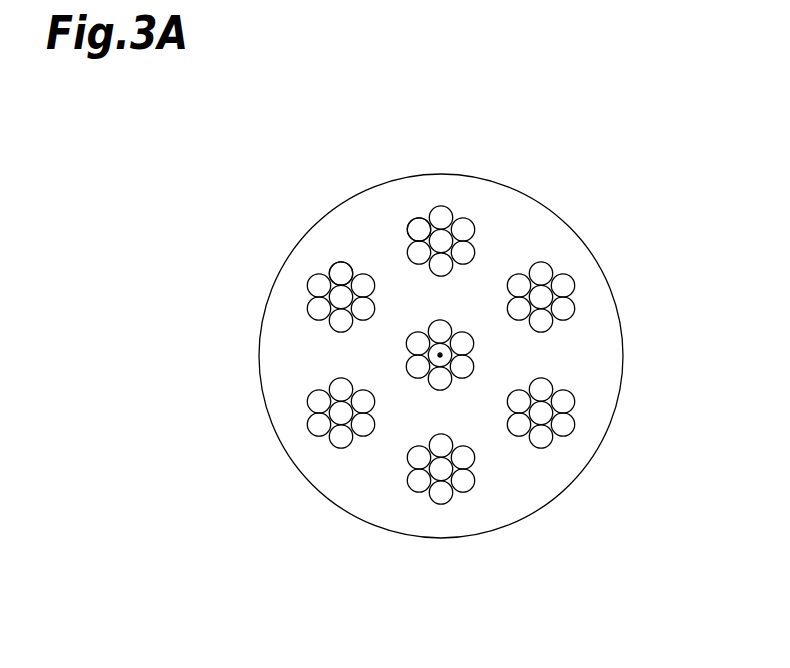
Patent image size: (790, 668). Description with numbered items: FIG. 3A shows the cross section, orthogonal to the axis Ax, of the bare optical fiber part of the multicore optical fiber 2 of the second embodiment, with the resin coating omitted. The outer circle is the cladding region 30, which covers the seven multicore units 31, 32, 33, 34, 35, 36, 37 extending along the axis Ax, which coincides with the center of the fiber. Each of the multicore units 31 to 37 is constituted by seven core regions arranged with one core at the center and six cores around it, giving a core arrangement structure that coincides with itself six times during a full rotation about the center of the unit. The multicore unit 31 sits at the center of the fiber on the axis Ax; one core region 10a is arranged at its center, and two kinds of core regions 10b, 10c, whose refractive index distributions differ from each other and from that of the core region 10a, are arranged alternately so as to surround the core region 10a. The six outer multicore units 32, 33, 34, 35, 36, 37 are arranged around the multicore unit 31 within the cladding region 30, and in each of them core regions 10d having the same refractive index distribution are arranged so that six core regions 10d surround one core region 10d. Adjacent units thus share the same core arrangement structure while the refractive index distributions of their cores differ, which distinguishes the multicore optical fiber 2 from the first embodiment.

The multicore optical fiber 2 is at (589, 147).
The cladding region 30 is at (607, 352).
The multicore unit 31 is at (366, 355).
The multicore unit 32 is at (314, 271).
The multicore unit 33 is at (443, 205).
The multicore unit 34 is at (569, 269).
The multicore unit 35 is at (569, 440).
The multicore unit 36 is at (424, 501).
The multicore unit 37 is at (313, 440).
The core region 10a is at (467, 349).
The core region 10b is at (440, 331).
The core region 10c is at (419, 339).
The core region 10d is at (341, 272).
The axis Ax is at (438, 355).